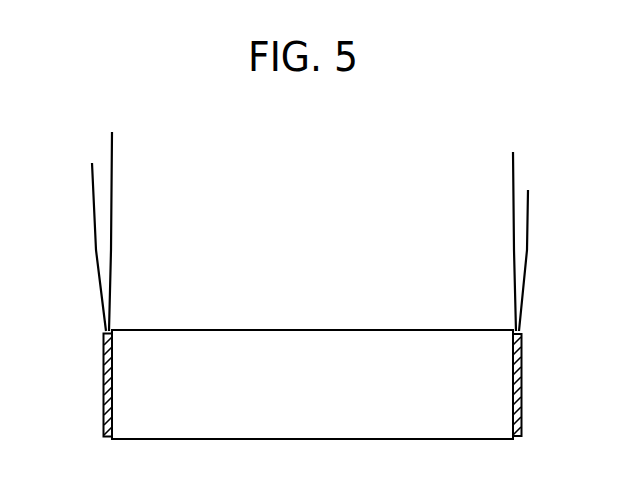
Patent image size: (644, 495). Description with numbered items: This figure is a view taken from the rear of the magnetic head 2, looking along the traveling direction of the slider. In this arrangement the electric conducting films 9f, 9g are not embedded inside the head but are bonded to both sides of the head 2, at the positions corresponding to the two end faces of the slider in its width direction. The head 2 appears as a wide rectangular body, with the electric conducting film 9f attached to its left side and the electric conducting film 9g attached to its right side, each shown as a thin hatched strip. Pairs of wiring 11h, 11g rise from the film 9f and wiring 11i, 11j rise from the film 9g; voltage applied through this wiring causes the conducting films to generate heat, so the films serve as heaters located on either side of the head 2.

The magnetic head 2 is at (296, 342).
The electric conducting film 9f is at (106, 400).
The electric conducting film 9g is at (519, 398).
The wiring 11h is at (112, 157).
The wiring 11g is at (93, 228).
The wiring 11i is at (513, 170).
The wiring 11j is at (528, 226).